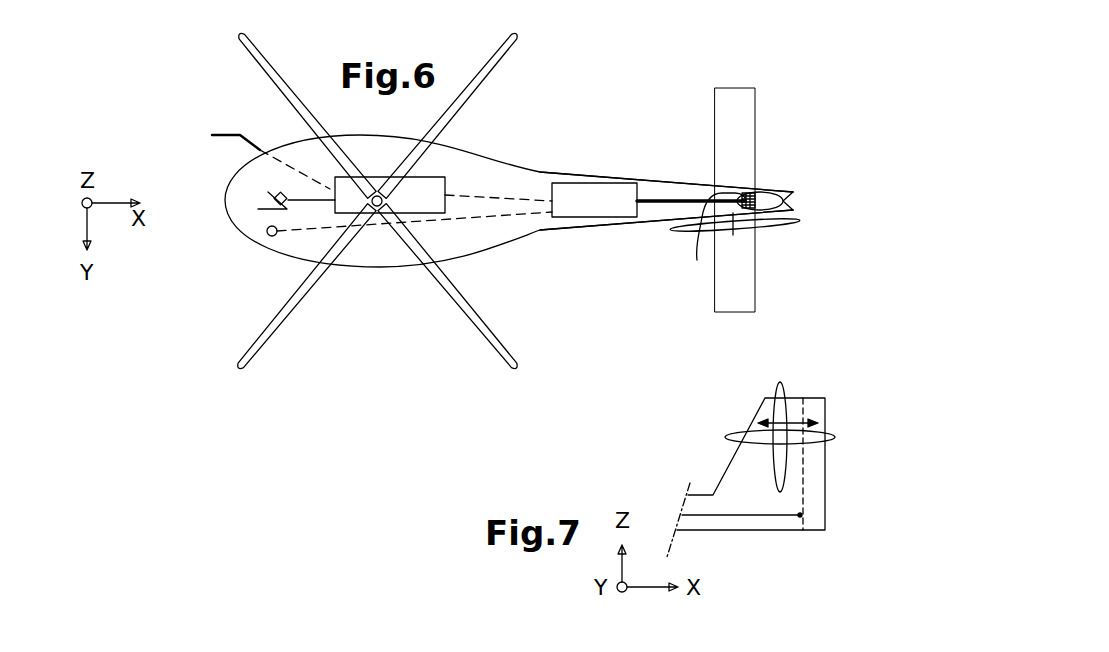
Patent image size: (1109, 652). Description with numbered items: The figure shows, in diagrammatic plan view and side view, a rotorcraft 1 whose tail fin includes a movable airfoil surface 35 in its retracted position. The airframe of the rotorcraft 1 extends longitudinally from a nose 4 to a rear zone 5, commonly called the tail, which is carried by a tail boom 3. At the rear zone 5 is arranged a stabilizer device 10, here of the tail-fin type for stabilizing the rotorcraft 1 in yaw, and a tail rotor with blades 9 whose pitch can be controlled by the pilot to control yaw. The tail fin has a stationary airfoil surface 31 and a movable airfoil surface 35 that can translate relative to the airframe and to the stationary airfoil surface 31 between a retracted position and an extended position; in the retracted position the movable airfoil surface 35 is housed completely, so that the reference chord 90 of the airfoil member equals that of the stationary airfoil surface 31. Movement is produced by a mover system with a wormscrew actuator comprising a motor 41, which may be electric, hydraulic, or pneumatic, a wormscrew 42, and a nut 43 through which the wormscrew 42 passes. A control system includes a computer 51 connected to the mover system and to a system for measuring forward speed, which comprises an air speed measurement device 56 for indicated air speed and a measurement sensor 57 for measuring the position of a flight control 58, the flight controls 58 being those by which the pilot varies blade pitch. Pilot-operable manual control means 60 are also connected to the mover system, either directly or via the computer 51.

In FIG. 6, the rotorcraft 1 is at (166, 306).
In FIG. 6, the tail boom 3 is at (530, 228).
In FIG. 6, the nose 4 is at (227, 193).
In FIG. 6, the rear zone 5 is at (810, 271).
In FIG. 6, the blades 9 is at (735, 224).
In FIG. 7, the blades 9 is at (833, 437).
In FIG. 6, the stabilizer device 10 is at (773, 193).
In FIG. 6, the stationary airfoil surface 31 is at (767, 187).
In FIG. 7, the stationary airfoil surface 31 is at (743, 477).
In FIG. 6, the movable airfoil surface 35 is at (793, 200).
In FIG. 7, the movable airfoil surface 35 is at (813, 500).
In FIG. 6, the motor 41 is at (594, 200).
In FIG. 6, the wormscrew 42 is at (667, 198).
In FIG. 6, the nut 43 is at (704, 234).
In FIG. 6, the computer 51 is at (406, 181).
In FIG. 6, the air speed measurement device 56 is at (215, 133).
In FIG. 6, the measurement sensor 57 is at (290, 206).
In FIG. 6, the flight controls 58 is at (273, 193).
In FIG. 6, the manual control means 60 is at (266, 235).
In FIG. 7, the reference chord 90 is at (797, 397).